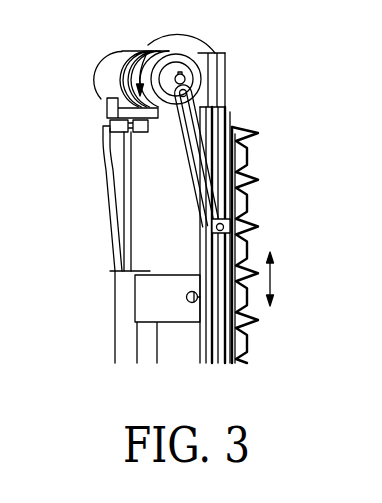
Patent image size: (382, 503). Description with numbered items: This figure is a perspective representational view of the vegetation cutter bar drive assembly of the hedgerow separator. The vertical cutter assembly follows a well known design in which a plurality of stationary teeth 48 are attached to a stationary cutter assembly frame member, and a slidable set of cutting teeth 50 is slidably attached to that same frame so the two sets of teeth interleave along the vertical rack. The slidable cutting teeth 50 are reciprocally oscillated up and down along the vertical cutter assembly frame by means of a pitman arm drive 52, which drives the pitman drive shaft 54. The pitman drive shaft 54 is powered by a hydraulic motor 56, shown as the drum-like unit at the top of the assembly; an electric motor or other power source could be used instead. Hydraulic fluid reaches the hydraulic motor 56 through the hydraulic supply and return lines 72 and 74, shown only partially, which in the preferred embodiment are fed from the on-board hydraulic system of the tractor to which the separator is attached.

The stationary teeth 48 is at (257, 208).
The slidable set of cutting teeth 50 is at (252, 181).
The pitman arm drive 52 is at (194, 79).
The pitman drive shaft 54 is at (192, 110).
The hydraulic motor 56 is at (118, 58).
The hydraulic supply line 72 is at (126, 169).
The hydraulic return line 74 is at (110, 156).